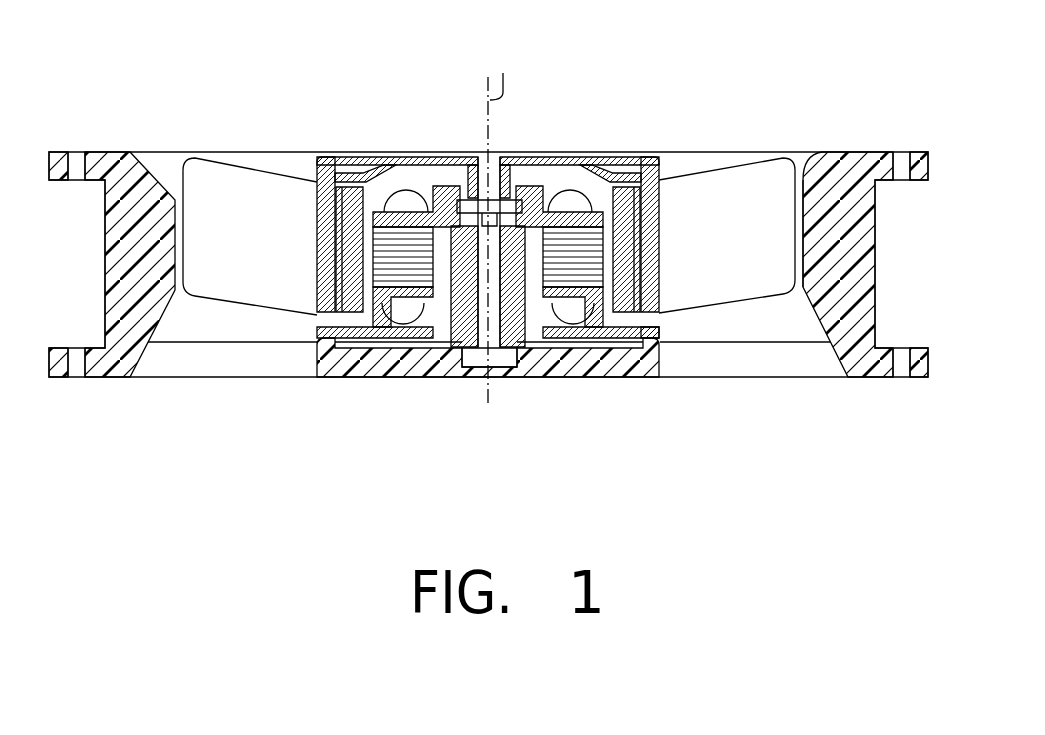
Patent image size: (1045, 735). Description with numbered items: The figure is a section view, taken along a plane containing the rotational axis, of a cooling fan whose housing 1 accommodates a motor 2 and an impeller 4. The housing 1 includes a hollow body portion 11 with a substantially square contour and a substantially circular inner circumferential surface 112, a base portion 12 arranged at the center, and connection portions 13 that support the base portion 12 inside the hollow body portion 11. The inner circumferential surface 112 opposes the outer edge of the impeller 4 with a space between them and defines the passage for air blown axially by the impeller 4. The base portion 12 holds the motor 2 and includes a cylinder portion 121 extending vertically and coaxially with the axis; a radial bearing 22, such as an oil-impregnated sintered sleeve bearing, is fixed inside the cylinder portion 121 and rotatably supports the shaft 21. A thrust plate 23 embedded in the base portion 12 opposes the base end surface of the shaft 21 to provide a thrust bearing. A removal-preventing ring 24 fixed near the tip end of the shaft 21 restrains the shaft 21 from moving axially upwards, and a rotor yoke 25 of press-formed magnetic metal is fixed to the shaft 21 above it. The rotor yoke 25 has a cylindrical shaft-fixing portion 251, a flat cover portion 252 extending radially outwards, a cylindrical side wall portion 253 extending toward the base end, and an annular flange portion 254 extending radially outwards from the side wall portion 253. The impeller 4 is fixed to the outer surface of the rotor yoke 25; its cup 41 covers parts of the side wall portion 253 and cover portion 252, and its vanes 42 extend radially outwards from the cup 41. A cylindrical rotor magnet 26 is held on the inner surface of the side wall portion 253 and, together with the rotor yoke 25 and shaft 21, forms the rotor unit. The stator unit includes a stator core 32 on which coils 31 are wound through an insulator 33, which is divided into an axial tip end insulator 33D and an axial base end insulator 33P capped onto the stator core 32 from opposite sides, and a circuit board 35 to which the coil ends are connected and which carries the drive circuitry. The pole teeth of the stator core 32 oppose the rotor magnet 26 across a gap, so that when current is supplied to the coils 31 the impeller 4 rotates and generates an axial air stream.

The housing 1 is at (882, 160).
The motor 2 is at (622, 77).
The impeller 4 is at (805, 80).
The hollow body portion 11 is at (127, 377).
The base portion 12 is at (622, 370).
The connection portions 13 is at (213, 377).
The shaft 21 is at (508, 375).
The radial bearing 22 is at (540, 370).
The thrust plate 23 is at (464, 375).
The removal-preventing ring 24 is at (527, 162).
The rotor yoke 25 is at (300, 78).
The rotor magnet 26 is at (650, 160).
The coils 31 is at (610, 160).
The stator core 32 is at (632, 160).
The insulator 33 is at (519, 264).
The axial tip end insulator 33D is at (552, 162).
The axial base end insulator 33P is at (660, 370).
The circuit board 35 is at (380, 377).
The cup 41 is at (683, 160).
The vanes 42 is at (772, 180).
The inner circumferential surface 112 is at (817, 160).
The cylinder portion 121 is at (573, 370).
The shaft-fixing portion 251 is at (478, 178).
The cover portion 252 is at (440, 175).
The side wall portion 253 is at (345, 175).
The flange portion 254 is at (308, 200).